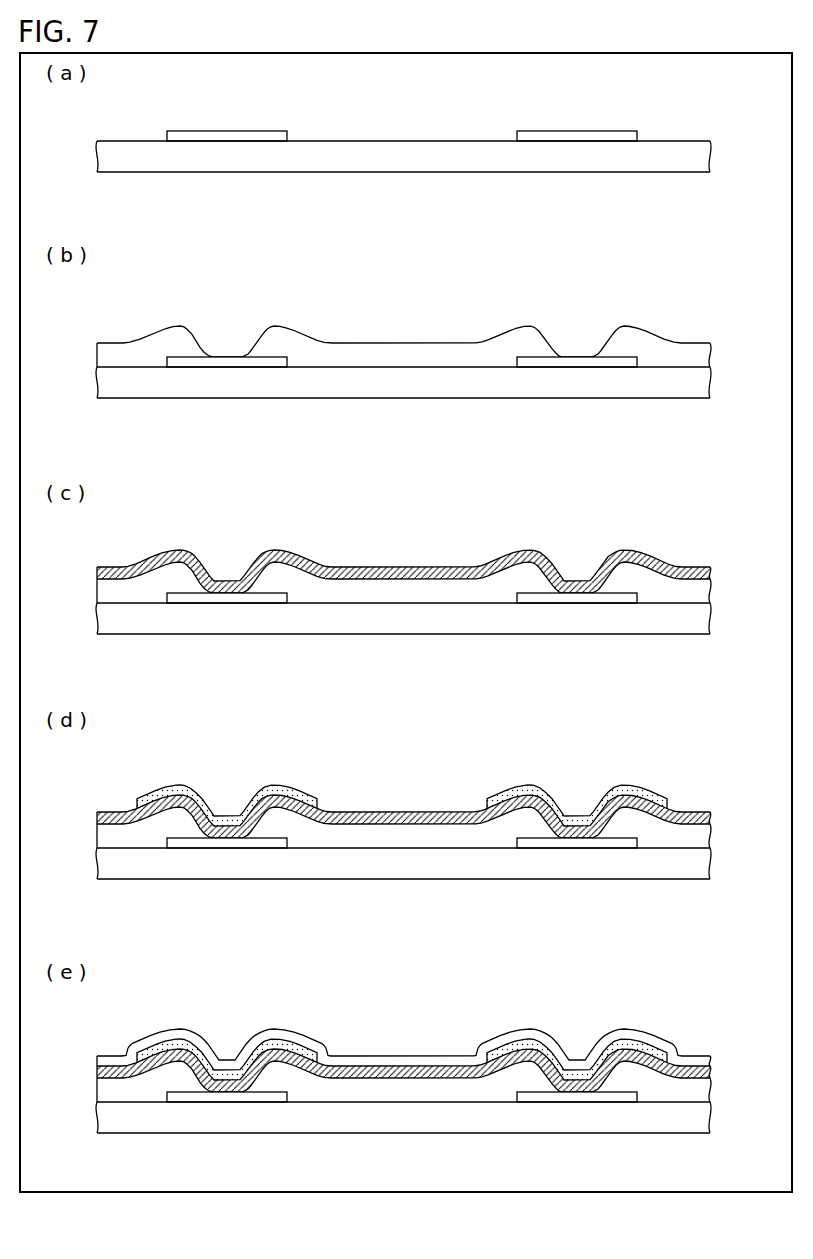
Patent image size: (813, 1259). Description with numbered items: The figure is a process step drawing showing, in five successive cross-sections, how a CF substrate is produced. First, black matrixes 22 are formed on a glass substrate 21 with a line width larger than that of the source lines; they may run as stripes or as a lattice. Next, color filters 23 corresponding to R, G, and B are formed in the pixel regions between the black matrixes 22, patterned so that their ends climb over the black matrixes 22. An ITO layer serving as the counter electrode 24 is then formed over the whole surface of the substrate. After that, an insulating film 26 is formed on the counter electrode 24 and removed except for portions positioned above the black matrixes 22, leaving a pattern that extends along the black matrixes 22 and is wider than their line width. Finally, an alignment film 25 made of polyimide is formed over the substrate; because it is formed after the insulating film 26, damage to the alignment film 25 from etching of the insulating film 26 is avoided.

The glass substrate 21 is at (427, 637).
The black matrix 22 is at (402, 652).
The color filter 23 is at (428, 749).
The counter electrode 24 is at (428, 826).
The alignment film 25 is at (428, 1047).
The insulating film 26 is at (402, 924).